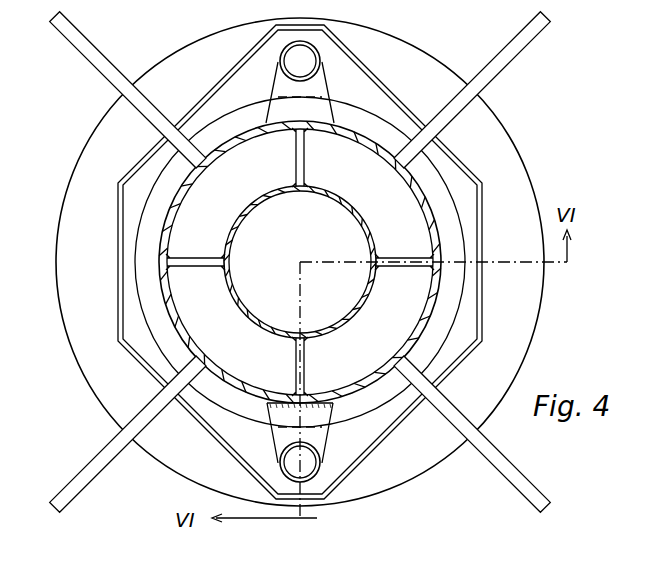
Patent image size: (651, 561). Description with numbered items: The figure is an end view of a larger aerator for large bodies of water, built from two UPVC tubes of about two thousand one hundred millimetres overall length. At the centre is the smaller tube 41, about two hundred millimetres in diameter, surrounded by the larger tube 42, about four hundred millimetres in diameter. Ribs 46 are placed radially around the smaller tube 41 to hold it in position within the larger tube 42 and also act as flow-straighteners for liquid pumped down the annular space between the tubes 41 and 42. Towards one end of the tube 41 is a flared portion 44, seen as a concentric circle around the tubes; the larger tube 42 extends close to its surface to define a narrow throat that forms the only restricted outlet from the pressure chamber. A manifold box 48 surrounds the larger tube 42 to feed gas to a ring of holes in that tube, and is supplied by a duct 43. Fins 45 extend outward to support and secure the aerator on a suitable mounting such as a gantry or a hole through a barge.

The smaller tube 41 is at (340, 207).
The larger tube 42 is at (173, 218).
The duct 43 is at (277, 80).
The flared portion 44 is at (515, 163).
The fins 45 is at (127, 42).
The ribs 46 is at (408, 258).
The manifold box 48 is at (393, 98).